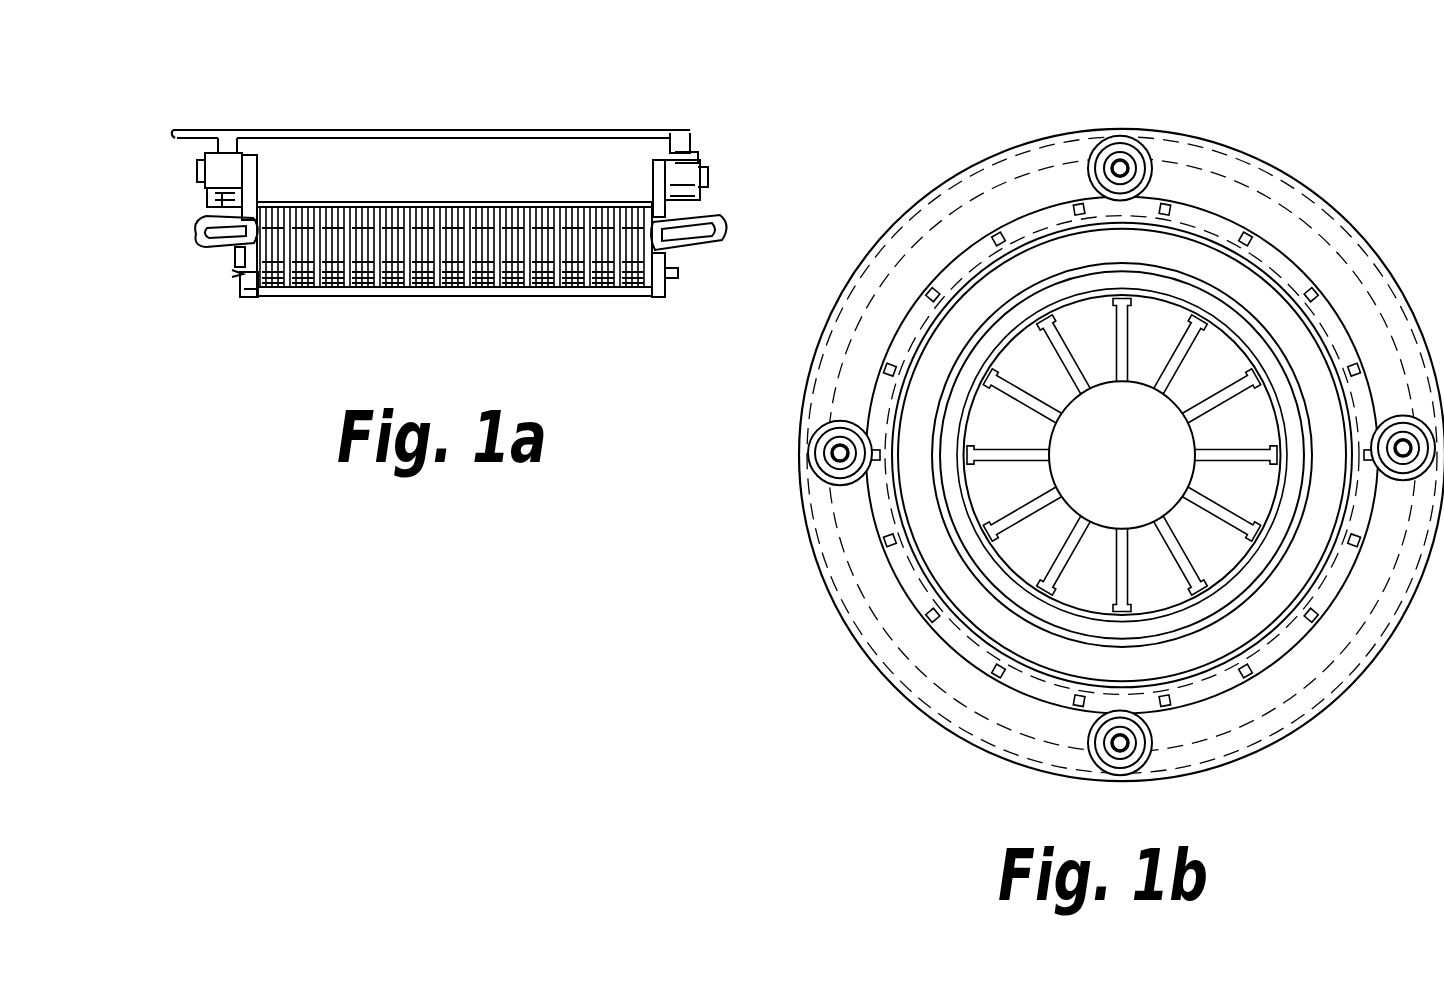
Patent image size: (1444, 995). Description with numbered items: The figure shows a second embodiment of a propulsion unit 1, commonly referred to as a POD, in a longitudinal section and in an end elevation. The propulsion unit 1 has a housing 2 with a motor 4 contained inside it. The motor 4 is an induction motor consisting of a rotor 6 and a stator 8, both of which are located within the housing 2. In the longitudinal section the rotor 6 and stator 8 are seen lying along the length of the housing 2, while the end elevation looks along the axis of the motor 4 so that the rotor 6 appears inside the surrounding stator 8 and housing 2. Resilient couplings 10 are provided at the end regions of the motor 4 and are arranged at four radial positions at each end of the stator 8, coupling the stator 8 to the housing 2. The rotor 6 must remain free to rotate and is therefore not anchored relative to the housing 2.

In FIG. 1B, the propulsion unit 1 is at (1067, 433).
In FIG. 1A, the housing 2 is at (590, 132).
In FIG. 1B, the housing 2 is at (1068, 128).
In FIG. 1B, the motor 4 is at (1294, 254).
In FIG. 1A, the rotor 6 is at (558, 288).
In FIG. 1B, the rotor 6 is at (963, 535).
In FIG. 1A, the stator 8 is at (593, 240).
In FIG. 1B, the stator 8 is at (1027, 262).
In FIG. 1B, the resilient couplings 10 is at (1082, 732).